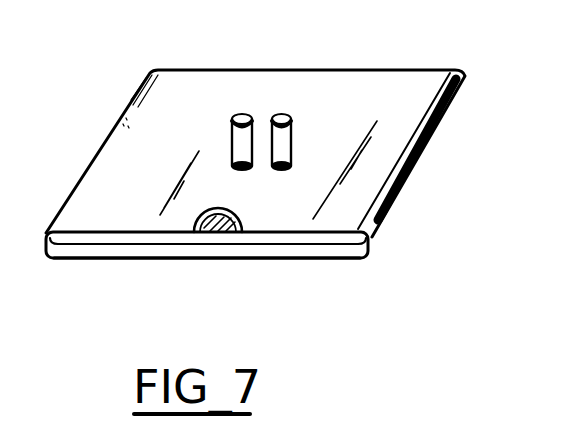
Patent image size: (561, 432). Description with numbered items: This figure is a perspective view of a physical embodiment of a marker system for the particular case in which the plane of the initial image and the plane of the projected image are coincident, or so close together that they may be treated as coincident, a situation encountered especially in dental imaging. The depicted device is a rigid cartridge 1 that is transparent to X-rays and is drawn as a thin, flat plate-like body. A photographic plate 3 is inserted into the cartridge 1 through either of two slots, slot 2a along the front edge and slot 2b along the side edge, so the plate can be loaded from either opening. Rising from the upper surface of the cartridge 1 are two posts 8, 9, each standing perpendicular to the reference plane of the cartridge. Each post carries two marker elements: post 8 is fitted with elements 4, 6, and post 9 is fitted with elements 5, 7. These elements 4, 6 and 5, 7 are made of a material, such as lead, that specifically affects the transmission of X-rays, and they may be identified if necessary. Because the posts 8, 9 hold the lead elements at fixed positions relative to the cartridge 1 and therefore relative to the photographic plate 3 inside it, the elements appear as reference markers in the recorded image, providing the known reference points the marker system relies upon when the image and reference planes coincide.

The rigid cartridge 1 is at (88, 257).
The slot 2a is at (142, 246).
The slot 2b is at (425, 150).
The photographic plate 3 is at (318, 258).
The element 4 is at (222, 117).
The element 5 is at (312, 123).
The element 6 is at (237, 170).
The element 7 is at (281, 170).
The post 8 is at (233, 141).
The post 9 is at (292, 138).